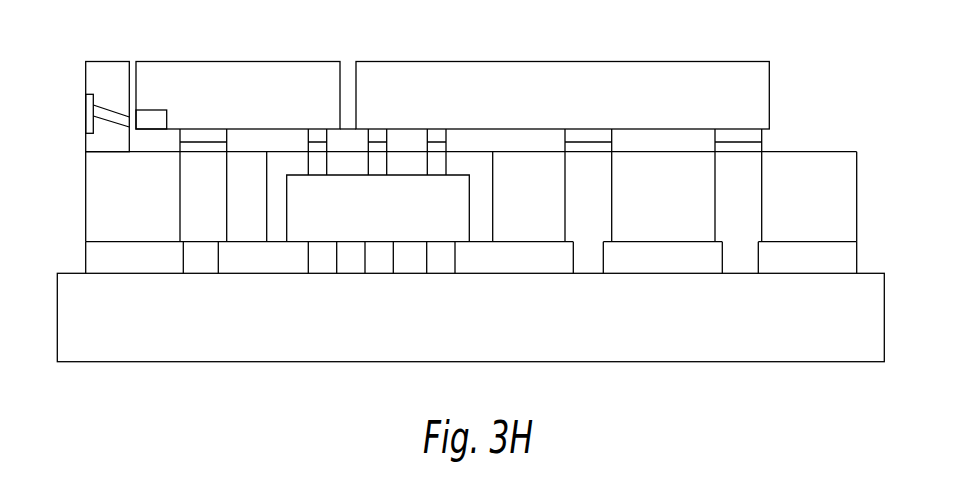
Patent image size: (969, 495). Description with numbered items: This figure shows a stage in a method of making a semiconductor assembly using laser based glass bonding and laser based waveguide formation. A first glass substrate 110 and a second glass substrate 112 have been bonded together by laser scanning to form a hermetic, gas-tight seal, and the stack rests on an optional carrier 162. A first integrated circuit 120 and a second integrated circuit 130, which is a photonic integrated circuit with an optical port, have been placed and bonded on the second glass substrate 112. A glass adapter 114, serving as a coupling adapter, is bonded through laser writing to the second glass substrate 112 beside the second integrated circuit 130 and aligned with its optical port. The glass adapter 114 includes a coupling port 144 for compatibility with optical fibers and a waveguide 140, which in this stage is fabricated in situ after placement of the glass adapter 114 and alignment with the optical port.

The first glass substrate 110 is at (843, 260).
The second glass substrate 112 is at (843, 192).
The glass adapter 114 is at (107, 75).
The first integrated circuit 120 is at (553, 85).
The second integrated circuit 130 is at (229, 85).
The waveguide 140 is at (113, 117).
The coupling port 144 is at (92, 115).
The carrier 162 is at (862, 308).